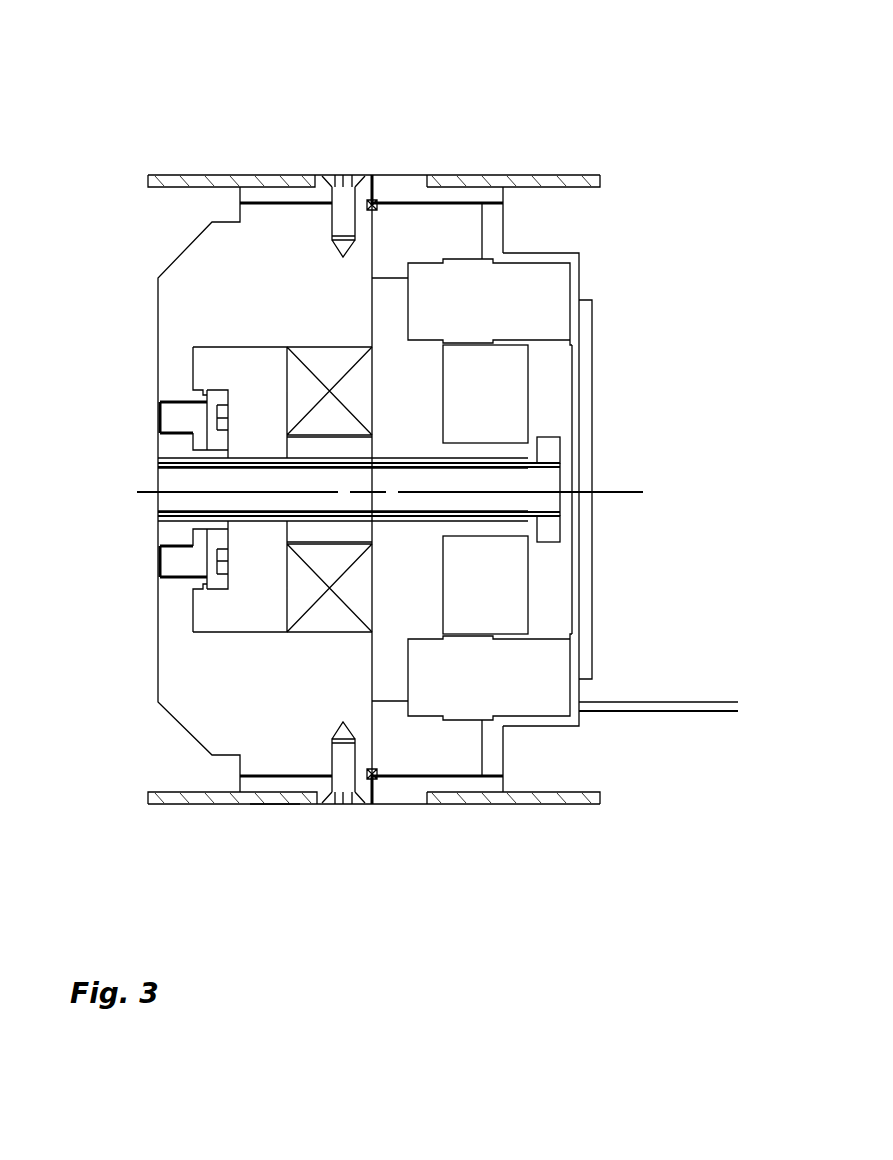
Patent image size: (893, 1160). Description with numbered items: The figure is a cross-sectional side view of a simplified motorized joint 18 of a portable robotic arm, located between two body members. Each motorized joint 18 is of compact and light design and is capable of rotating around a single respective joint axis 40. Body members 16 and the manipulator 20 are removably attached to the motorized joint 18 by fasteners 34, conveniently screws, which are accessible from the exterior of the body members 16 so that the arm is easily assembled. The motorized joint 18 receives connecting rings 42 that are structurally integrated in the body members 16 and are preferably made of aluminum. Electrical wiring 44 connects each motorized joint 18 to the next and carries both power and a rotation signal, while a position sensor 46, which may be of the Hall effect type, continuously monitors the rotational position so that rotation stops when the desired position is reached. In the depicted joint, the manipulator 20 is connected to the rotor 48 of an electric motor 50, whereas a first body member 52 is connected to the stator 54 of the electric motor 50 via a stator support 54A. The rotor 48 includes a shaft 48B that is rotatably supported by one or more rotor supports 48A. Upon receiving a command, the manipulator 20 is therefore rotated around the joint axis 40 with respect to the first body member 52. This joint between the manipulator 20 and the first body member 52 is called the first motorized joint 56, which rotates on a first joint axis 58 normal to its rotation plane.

The body member 16 is at (190, 177).
The motorized joint 18 is at (396, 86).
The manipulator 20 is at (168, 806).
The fastener 34 is at (348, 190).
The joint axis 40 is at (620, 491).
The connecting ring 42 is at (287, 198).
The electrical wiring 44 is at (641, 702).
The position sensor 46 is at (548, 450).
The rotor 48 is at (500, 400).
The rotor support 48A is at (160, 626).
The shaft 48B is at (172, 468).
The electric motor 50 is at (543, 357).
The first body member 52 is at (569, 805).
The stator 54 is at (527, 280).
The stator support 54A is at (501, 230).
The first motorized joint 56 is at (272, 830).
The first joint axis 58 is at (605, 493).